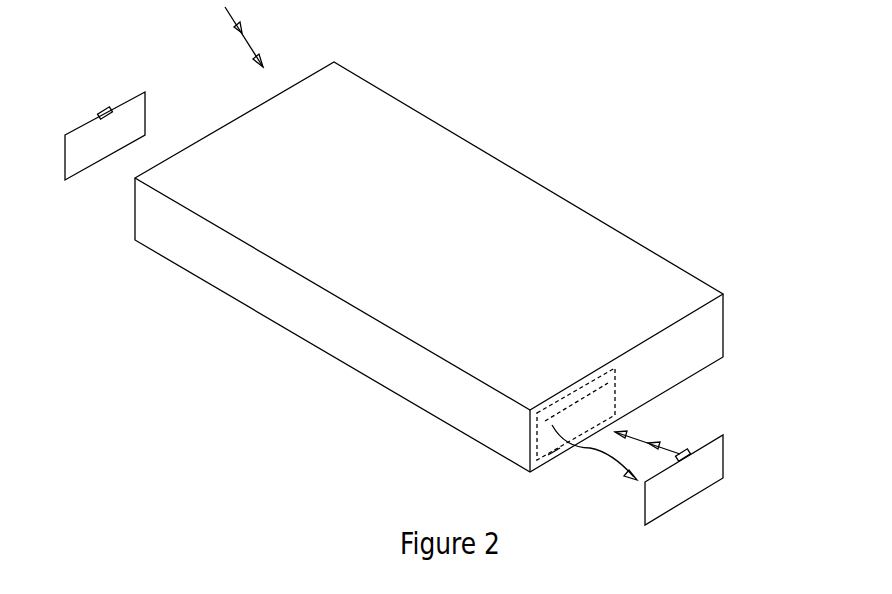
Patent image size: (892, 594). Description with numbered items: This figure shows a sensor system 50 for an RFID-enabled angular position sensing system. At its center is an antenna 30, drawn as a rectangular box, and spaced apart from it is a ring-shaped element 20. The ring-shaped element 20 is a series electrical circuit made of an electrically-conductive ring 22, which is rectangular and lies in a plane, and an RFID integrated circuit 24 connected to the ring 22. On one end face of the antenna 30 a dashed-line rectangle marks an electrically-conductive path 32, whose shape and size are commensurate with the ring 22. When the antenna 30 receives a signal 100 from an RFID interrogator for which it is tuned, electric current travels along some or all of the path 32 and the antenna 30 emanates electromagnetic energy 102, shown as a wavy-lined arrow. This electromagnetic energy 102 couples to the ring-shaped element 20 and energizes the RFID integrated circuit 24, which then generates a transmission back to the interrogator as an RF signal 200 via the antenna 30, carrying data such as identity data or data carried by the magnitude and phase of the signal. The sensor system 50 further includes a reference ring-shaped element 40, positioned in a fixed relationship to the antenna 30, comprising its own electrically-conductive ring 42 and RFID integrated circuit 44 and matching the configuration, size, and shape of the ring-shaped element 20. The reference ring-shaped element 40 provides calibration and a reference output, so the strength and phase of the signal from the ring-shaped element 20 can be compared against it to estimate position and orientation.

The ring-shaped element 20 is at (738, 455).
The electrically-conductive ring 22 is at (703, 492).
The RFID integrated circuit 24 is at (690, 452).
The antenna 30 is at (292, 318).
The electrically-conductive path 32 is at (553, 450).
The reference ring-shaped element 40 is at (102, 127).
The electrically-conductive ring 42 is at (77, 177).
The RFID integrated circuit 44 is at (123, 72).
The sensor system 50 is at (429, 302).
The signal 100 is at (235, 22).
The electromagnetic energy 102 is at (612, 468).
The RF signal 200 is at (668, 447).